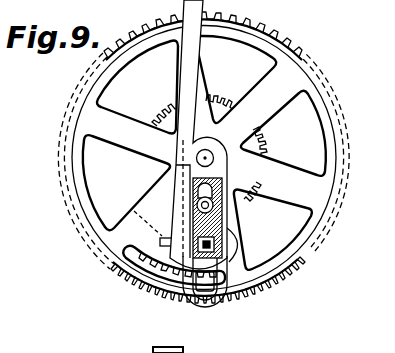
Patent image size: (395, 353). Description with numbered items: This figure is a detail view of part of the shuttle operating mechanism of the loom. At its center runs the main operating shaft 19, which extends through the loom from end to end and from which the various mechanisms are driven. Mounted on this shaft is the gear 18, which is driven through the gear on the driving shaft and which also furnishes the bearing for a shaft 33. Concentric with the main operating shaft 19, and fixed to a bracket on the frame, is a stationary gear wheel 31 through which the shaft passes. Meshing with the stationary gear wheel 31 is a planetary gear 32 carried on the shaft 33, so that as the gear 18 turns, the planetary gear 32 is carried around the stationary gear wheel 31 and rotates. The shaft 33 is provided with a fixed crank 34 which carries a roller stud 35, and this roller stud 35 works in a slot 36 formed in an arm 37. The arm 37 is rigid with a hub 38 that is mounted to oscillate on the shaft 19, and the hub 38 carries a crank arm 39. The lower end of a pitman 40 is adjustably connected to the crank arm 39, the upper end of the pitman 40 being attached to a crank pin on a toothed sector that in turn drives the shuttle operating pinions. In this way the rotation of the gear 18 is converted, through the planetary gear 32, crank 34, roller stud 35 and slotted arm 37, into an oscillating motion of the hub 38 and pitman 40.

The gear 18 is at (270, 290).
The main operating shaft 19 is at (234, 108).
The stationary gear wheel 31 is at (264, 150).
The planetary gear 32 is at (166, 272).
The shaft 33 is at (134, 211).
The fixed crank 34 is at (238, 241).
The roller stud 35 is at (232, 252).
The slot 36 is at (229, 291).
The arm 37 is at (200, 302).
The hub 38 is at (222, 162).
The crank arm 39 is at (226, 220).
The pitman 40 is at (182, 78).